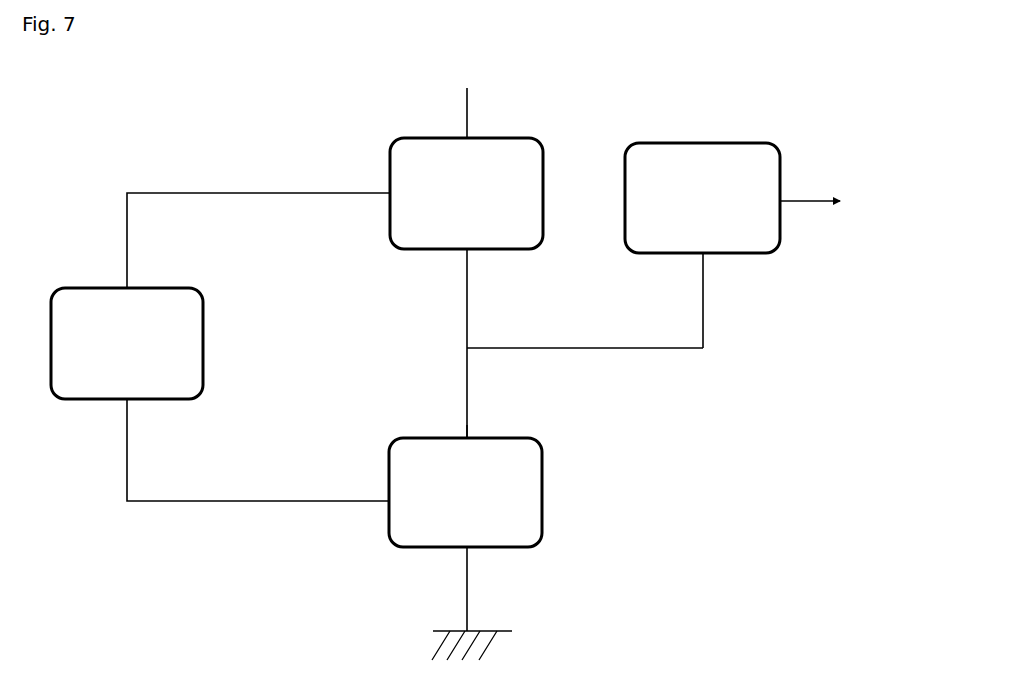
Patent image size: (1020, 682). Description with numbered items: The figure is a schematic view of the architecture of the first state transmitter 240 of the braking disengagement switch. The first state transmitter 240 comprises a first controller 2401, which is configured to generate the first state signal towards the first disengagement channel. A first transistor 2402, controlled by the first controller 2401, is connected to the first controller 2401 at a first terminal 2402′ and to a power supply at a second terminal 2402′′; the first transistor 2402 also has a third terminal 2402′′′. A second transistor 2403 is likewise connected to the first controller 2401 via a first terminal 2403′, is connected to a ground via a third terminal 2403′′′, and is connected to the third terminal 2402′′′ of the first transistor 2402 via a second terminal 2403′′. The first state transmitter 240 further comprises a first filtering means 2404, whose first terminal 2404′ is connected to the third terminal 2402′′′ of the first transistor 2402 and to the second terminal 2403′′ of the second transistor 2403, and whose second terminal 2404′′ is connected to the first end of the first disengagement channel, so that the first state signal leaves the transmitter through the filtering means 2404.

The first state transmitter 240 is at (686, 450).
The first controller 2401 is at (100, 287).
The first transistor 2402 is at (393, 137).
The first terminal of the first transistor 2402′ is at (388, 192).
The second terminal of the first transistor 2402′′ is at (473, 138).
The third terminal of the first transistor 2402′′′ is at (473, 250).
The second transistor 2403 is at (414, 556).
The first terminal of the second transistor 2403′ is at (388, 500).
The second terminal of the second transistor 2403′′ is at (470, 437).
The third terminal of the second transistor 2403′′′ is at (473, 548).
The first filtering means 2404 is at (633, 141).
The first terminal of the first filtering means 2404′ is at (703, 254).
The second terminal of the first filtering means 2404′′ is at (781, 200).